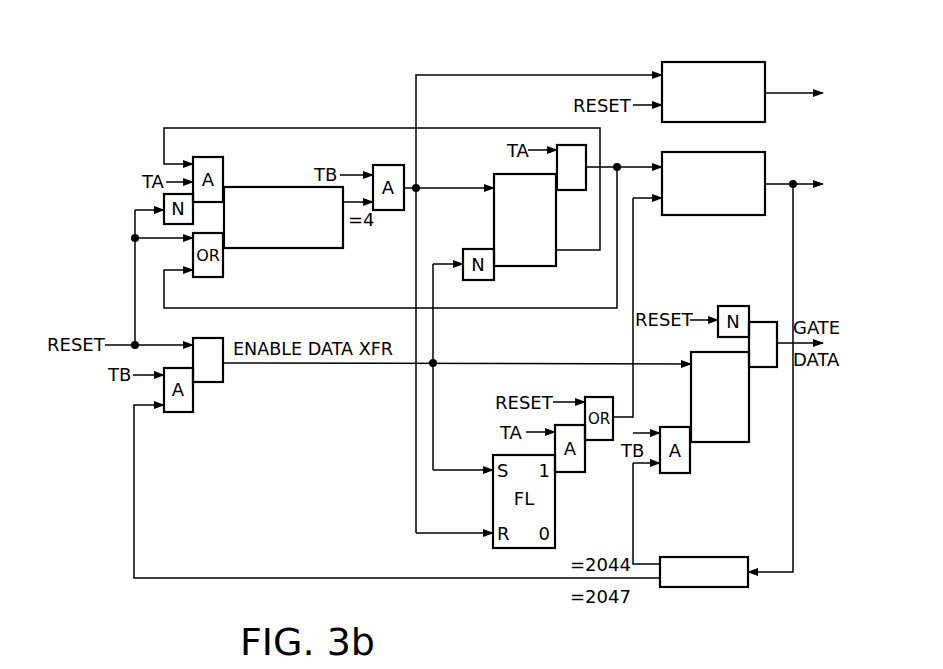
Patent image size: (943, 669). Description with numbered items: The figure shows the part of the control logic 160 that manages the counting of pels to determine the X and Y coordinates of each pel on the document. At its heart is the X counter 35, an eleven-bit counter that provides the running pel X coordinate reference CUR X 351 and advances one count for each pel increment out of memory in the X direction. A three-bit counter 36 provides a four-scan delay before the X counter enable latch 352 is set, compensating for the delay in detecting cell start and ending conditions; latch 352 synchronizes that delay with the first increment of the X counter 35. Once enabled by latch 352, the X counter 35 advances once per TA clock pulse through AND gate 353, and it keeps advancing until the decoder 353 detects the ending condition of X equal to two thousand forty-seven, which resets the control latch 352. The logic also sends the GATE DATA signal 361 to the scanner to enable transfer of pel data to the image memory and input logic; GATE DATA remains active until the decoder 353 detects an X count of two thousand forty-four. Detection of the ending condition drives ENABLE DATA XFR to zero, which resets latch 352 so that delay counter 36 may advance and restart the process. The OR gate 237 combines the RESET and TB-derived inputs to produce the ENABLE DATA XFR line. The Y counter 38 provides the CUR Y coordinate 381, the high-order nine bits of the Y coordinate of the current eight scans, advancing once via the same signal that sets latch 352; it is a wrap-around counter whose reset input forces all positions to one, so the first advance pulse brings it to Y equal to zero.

The control logic 160 is at (248, 92).
The three-bit counter 36 is at (263, 188).
The AND gate / decoder 353 is at (567, 145).
The X counter enable latch 352 is at (572, 208).
The Y counter 38 is at (656, 58).
The CUR Y coordinate 381 is at (791, 95).
The X counter 35 is at (661, 151).
The CUR X 351 is at (781, 190).
The OR gate 237 is at (229, 381).
The GATE DATA signal 361 is at (701, 352).